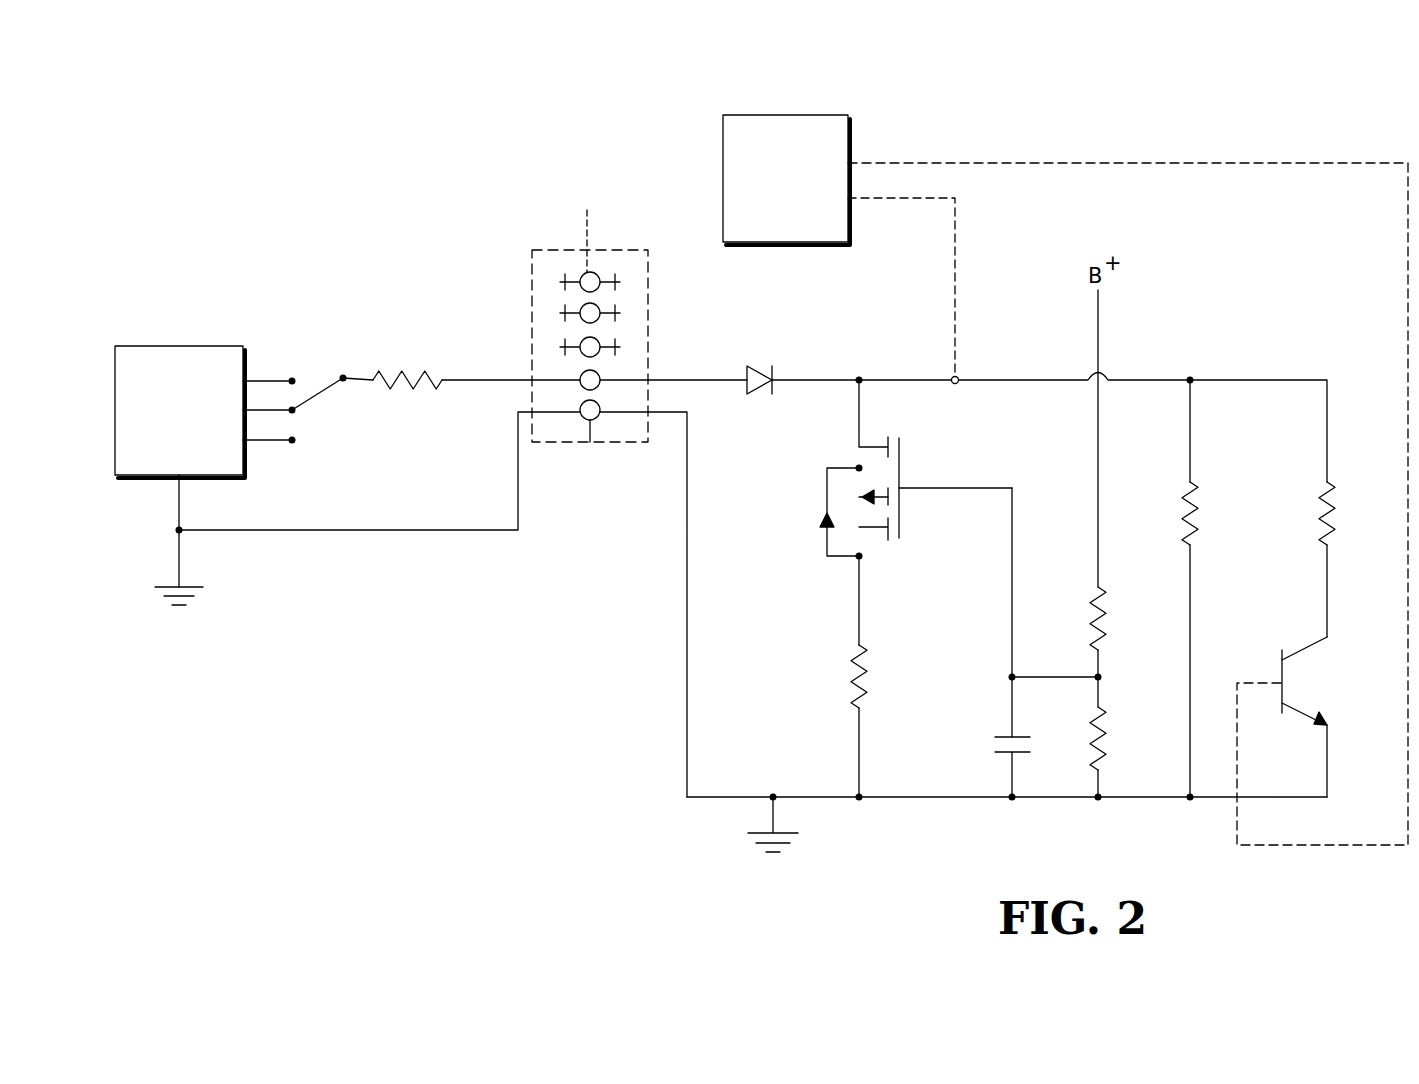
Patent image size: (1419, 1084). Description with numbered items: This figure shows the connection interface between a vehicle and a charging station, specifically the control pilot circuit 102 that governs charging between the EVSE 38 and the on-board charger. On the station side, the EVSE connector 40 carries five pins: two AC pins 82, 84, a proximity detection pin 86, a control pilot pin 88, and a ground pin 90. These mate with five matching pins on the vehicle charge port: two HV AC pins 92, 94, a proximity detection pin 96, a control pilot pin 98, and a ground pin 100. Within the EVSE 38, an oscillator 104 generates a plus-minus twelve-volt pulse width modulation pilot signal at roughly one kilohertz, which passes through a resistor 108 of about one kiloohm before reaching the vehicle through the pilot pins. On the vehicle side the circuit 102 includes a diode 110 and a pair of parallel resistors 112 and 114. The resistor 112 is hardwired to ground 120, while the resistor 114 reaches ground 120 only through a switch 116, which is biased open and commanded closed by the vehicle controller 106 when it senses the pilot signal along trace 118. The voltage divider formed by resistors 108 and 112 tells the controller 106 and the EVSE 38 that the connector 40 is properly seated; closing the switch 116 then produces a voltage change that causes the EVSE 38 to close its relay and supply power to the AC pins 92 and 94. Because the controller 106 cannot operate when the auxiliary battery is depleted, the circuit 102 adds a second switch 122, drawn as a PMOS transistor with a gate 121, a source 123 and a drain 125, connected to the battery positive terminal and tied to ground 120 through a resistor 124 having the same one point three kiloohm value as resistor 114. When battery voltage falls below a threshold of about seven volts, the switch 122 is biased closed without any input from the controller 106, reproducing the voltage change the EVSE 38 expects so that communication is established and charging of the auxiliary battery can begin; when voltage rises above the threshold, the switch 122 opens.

The EVSE 38 is at (192, 425).
The EVSE connector 40 is at (592, 337).
The AC pin 82 is at (566, 276).
The AC pin 84 is at (566, 306).
The proximity detection pin 86 is at (566, 340).
The control pilot pin 88 is at (550, 379).
The ground pin 90 is at (558, 414).
The HV AC pin 92 is at (614, 276).
The HV AC pin 94 is at (614, 306).
The proximity detection pin 96 is at (614, 340).
The control pilot pin 98 is at (630, 382).
The ground pin 100 is at (604, 414).
The control pilot circuit 102 is at (1143, 130).
The oscillator 104 is at (183, 328).
The vehicle controller 106 is at (786, 180).
The resistor 108 is at (390, 352).
The diode 110 is at (760, 366).
The resistor 112 is at (1200, 508).
The resistor 114 is at (1337, 508).
The switch 116 is at (1280, 673).
The trace 118 is at (958, 305).
The ground 120 is at (193, 586).
The gate 121 is at (902, 500).
The switch 122 is at (902, 470).
The source 123 is at (861, 442).
The resistor 124 is at (870, 670).
The drain 125 is at (861, 532).